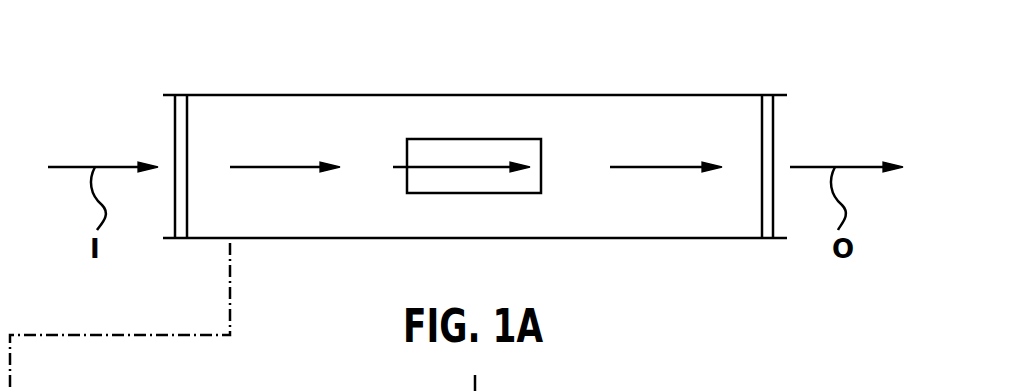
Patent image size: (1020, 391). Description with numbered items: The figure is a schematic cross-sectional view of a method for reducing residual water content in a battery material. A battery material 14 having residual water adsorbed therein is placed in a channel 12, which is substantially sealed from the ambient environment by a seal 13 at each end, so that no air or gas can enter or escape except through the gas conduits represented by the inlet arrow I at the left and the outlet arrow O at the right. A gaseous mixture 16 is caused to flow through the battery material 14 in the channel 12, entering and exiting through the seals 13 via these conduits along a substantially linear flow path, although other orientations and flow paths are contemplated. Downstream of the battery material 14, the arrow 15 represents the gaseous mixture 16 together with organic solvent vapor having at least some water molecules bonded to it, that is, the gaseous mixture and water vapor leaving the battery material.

The channel 12 is at (593, 95).
The seal 13 is at (181, 102).
The battery material 14 is at (473, 139).
The gaseous mixture and water vapor 15 is at (665, 165).
The gaseous mixture 16 is at (283, 168).